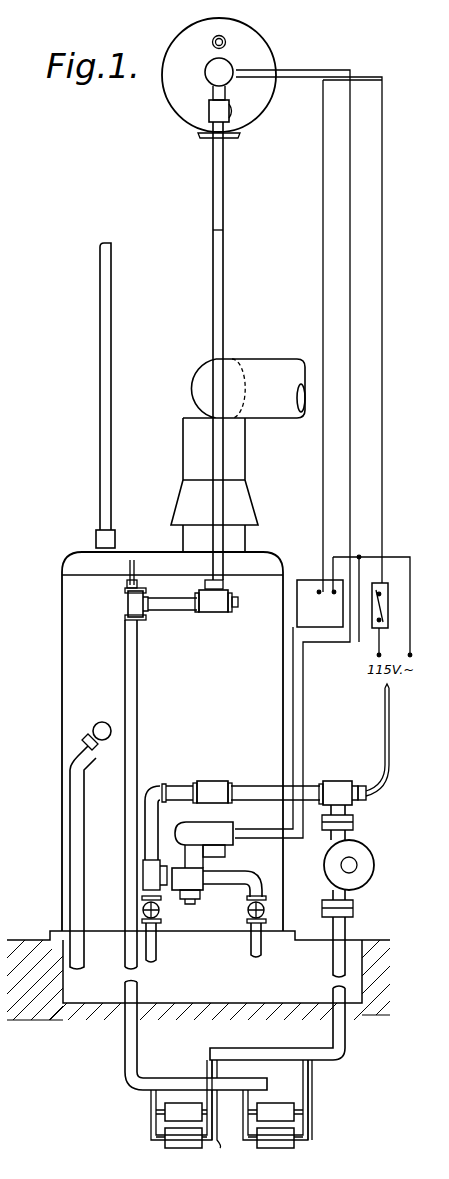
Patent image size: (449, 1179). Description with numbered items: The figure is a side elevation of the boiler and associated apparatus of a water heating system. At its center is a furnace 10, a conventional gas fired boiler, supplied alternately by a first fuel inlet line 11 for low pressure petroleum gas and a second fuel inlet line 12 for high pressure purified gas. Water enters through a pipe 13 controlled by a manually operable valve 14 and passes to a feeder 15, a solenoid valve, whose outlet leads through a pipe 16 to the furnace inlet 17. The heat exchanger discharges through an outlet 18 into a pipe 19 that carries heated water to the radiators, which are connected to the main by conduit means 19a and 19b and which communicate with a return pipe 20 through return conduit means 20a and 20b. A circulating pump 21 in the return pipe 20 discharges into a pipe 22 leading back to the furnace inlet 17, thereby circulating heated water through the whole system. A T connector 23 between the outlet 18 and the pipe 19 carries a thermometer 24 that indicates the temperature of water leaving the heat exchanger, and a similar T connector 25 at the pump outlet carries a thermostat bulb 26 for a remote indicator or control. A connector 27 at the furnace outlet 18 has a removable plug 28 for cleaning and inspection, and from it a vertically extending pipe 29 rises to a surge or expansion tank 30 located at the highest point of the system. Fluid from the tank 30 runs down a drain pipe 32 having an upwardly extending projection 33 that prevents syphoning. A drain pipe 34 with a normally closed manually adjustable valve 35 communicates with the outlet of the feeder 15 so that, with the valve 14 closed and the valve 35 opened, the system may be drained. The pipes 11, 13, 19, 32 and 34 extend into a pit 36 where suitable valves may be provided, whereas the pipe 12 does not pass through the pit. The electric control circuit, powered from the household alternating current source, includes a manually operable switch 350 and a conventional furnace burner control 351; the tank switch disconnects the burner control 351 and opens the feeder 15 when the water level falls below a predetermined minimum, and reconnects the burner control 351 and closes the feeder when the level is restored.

The furnace 10 is at (62, 625).
The first fuel inlet line 11 is at (74, 806).
The second fuel inlet line 12 is at (105, 433).
The pipe 13 is at (259, 942).
The manually operable valve 14 is at (247, 912).
The feeder 15 is at (218, 826).
The pipe 16 is at (165, 784).
The furnace inlet 17 is at (218, 780).
The outlet 18 is at (215, 614).
The pipe 19 is at (133, 686).
The conduit means 19a is at (150, 1122).
The conduit means 19b is at (250, 1100).
The return pipe 20 is at (346, 926).
The return conduit means 20a is at (225, 1113).
The return conduit means 20b is at (312, 1128).
The circulating pump 21 is at (366, 862).
The pipe 22 is at (252, 790).
The T connector 23 is at (130, 604).
The thermometer 24 is at (130, 576).
The T connector 25 is at (342, 784).
The thermostat bulb 26 is at (366, 803).
The connector 27 is at (207, 608).
The plug 28 is at (236, 606).
The vertically extending pipe 29 is at (218, 306).
The expansion tank 30 is at (272, 100).
The drain pipe 32 is at (218, 190).
The upwardly extending projection 33 is at (232, 88).
The drain pipe 34 is at (156, 946).
The manually adjustable valve 35 is at (160, 912).
The pit 36 is at (200, 988).
The manually operable switch 350 is at (383, 596).
The furnace burner control 351 is at (304, 580).